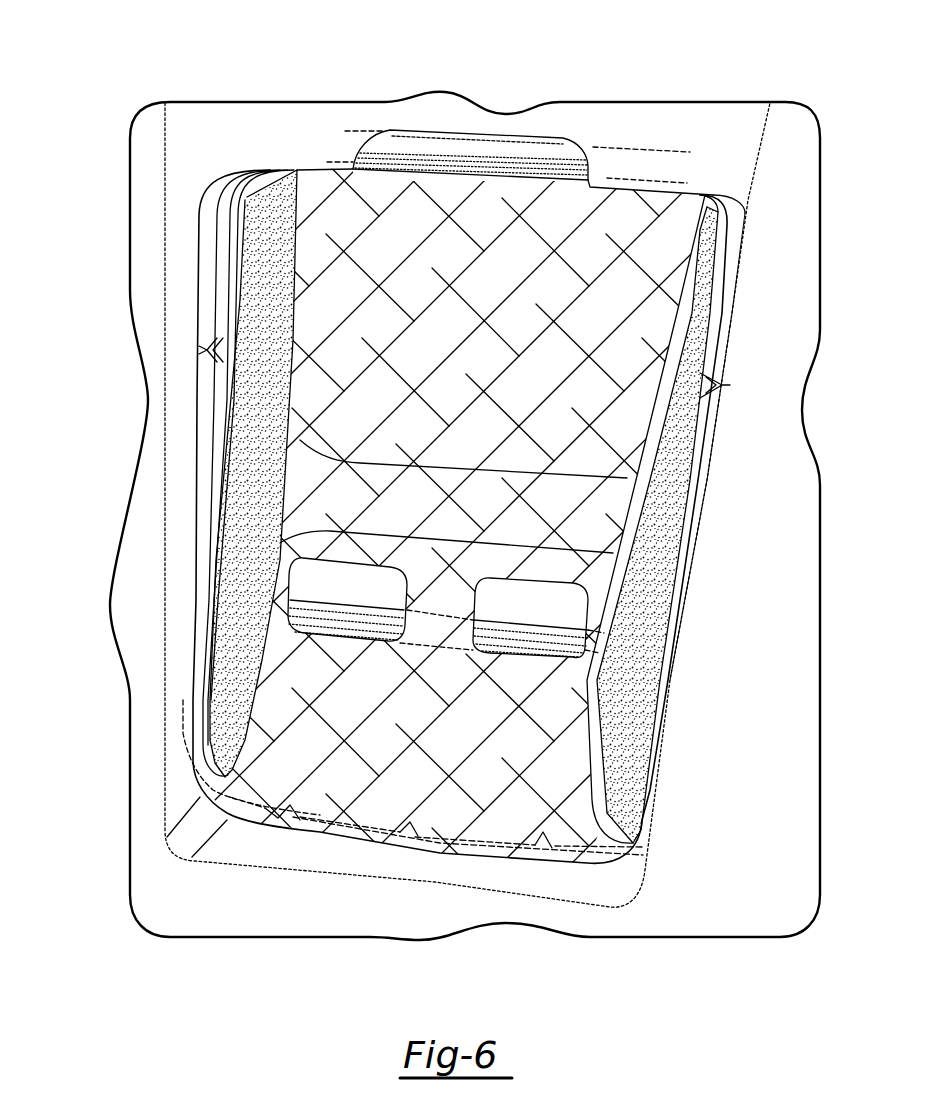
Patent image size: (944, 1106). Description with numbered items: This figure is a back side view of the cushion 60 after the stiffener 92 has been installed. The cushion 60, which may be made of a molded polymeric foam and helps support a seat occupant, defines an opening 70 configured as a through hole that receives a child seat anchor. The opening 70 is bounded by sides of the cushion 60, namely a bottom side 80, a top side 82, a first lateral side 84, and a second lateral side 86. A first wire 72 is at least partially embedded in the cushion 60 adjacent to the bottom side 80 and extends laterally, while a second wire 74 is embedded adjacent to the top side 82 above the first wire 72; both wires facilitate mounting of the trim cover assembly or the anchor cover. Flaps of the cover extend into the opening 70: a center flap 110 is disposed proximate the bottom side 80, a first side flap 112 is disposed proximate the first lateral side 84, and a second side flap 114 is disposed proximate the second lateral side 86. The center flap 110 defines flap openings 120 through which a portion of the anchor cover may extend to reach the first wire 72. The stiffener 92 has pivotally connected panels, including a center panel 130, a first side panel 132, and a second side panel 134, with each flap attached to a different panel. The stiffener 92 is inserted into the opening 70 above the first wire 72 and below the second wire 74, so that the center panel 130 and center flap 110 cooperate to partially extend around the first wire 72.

The cushion 60 is at (138, 520).
The opening 70 is at (392, 230).
The first wire 72 is at (353, 632).
The second wire 74 is at (470, 155).
The bottom side 80 is at (258, 854).
The top side 82 is at (640, 197).
The first lateral side 84 is at (208, 351).
The second lateral side 86 is at (707, 452).
The stiffener 92 is at (378, 832).
The center flap 110 is at (416, 799).
The first side flap 112 is at (262, 298).
The second side flap 114 is at (690, 298).
The flap opening 120 is at (503, 588).
The center panel 130 is at (463, 843).
The first side panel 132 is at (220, 209).
The second side panel 134 is at (730, 223).